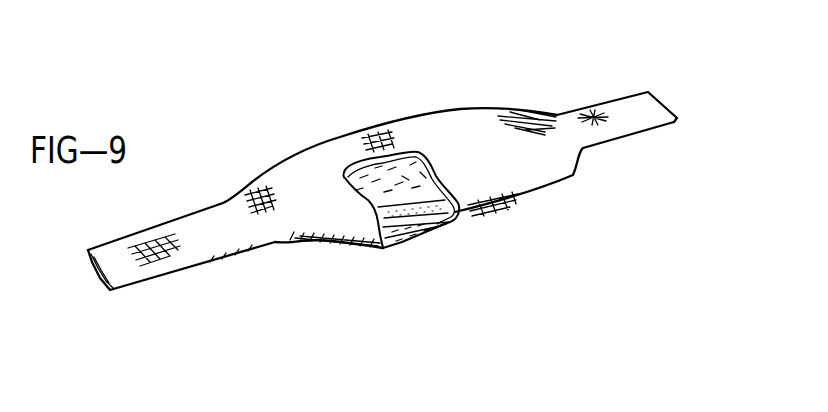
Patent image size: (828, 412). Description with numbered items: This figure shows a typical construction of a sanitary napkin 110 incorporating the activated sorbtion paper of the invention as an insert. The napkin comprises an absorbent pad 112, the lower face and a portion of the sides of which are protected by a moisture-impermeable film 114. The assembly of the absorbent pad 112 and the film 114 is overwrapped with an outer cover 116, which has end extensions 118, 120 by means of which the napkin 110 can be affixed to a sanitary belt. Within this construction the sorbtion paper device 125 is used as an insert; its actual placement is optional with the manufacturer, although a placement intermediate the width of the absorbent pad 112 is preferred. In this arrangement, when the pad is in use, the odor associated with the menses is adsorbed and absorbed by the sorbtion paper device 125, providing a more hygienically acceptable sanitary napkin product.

The sanitary napkin 110 is at (562, 221).
The absorbent pad 112 is at (357, 174).
The moisture-impermeable film 114 is at (443, 228).
The outer cover 116 is at (453, 122).
The end extension 118 is at (178, 240).
The end extension 120 is at (613, 108).
The sorbtion paper device 125 is at (417, 210).